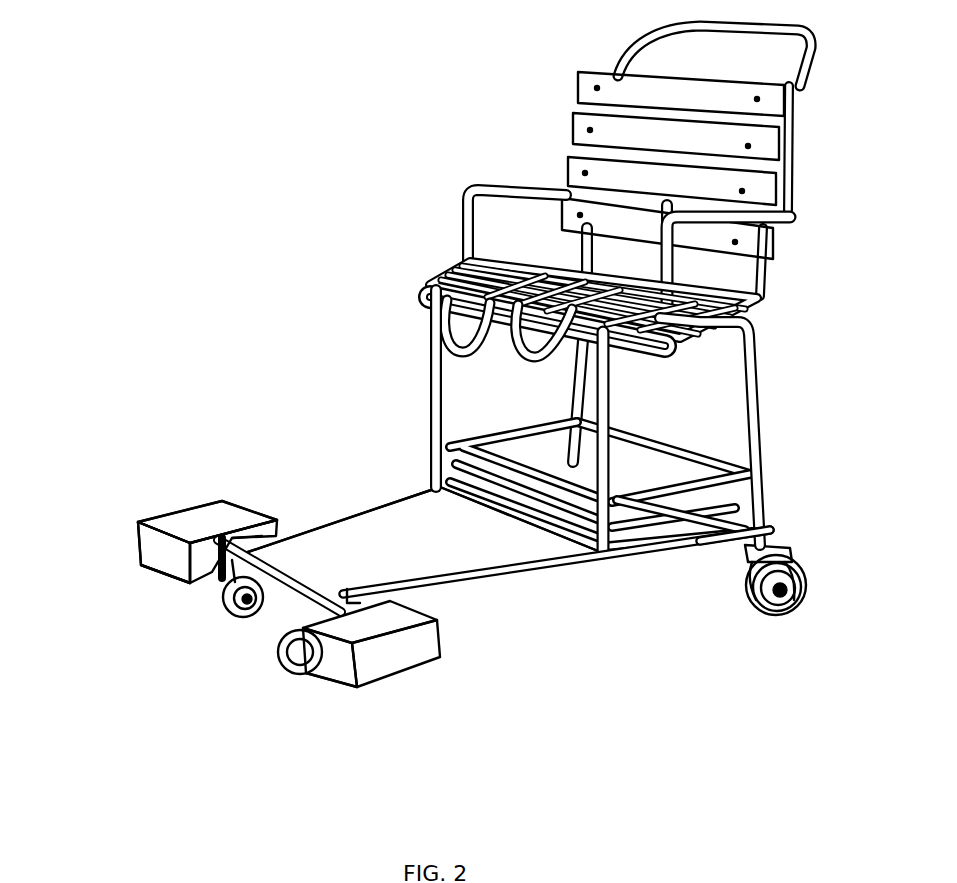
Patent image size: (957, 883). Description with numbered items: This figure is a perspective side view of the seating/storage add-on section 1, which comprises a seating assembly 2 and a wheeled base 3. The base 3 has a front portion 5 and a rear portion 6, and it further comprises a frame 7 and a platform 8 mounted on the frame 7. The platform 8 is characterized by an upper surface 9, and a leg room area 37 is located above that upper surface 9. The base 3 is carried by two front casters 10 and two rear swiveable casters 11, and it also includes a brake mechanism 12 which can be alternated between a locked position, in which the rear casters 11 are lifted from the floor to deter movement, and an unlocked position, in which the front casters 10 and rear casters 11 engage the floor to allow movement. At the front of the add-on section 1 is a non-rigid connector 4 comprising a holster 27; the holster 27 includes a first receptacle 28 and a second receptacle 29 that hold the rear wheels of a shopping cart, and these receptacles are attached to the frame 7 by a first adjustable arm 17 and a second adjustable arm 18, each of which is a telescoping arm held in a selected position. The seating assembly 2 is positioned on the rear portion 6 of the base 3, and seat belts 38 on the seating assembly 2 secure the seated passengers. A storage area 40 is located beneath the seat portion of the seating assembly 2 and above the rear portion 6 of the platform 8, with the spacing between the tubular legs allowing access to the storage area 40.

The seating/storage add-on section 1 is at (461, 424).
The seating assembly 2 is at (627, 289).
The base 3 is at (524, 590).
The non-rigid connector 4 is at (167, 513).
The front portion 5 is at (213, 483).
The rear portion 6 is at (723, 577).
The frame 7 is at (290, 592).
The platform 8 is at (440, 540).
The upper surface 9 is at (390, 556).
The front casters 10 is at (213, 617).
The rear swiveable casters 11 is at (547, 473).
The brake mechanism 12 is at (640, 497).
The first adjustable arm 17 is at (345, 606).
The second adjustable arm 18 is at (192, 568).
The holster 27 is at (372, 614).
The first receptacle 28 is at (330, 690).
The second receptacle 29 is at (167, 572).
The leg room area 37 is at (376, 462).
The seat belts 38 is at (450, 283).
The storage area 40 is at (642, 400).